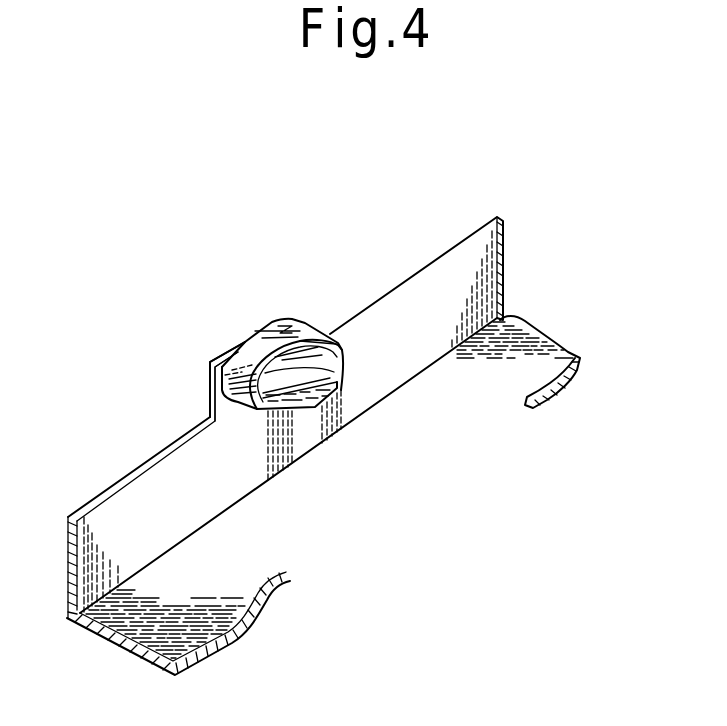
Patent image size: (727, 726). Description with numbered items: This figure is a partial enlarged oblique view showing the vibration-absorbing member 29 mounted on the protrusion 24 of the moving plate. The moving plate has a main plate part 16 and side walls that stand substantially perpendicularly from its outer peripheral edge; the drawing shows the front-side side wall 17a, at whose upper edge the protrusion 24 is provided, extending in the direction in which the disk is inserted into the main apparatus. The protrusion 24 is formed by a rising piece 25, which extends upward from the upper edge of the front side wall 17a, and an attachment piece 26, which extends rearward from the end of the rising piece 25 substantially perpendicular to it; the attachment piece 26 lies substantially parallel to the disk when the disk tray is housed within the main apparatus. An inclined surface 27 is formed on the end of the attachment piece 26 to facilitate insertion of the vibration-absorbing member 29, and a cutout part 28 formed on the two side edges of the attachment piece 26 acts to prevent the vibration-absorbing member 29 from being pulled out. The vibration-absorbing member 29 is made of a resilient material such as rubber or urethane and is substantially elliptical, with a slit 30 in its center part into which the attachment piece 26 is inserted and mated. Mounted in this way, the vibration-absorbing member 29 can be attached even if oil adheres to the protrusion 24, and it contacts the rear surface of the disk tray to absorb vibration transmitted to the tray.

The main plate part 16 is at (571, 292).
The front-side side wall 17a is at (253, 550).
The protrusion 24 is at (274, 332).
The rising piece 25 is at (209, 387).
The attachment piece 26 is at (388, 452).
The inclined surface 27 is at (321, 468).
The cutout part 28 is at (232, 440).
The vibration-absorbing member 29 is at (255, 340).
The slit 30 is at (337, 340).